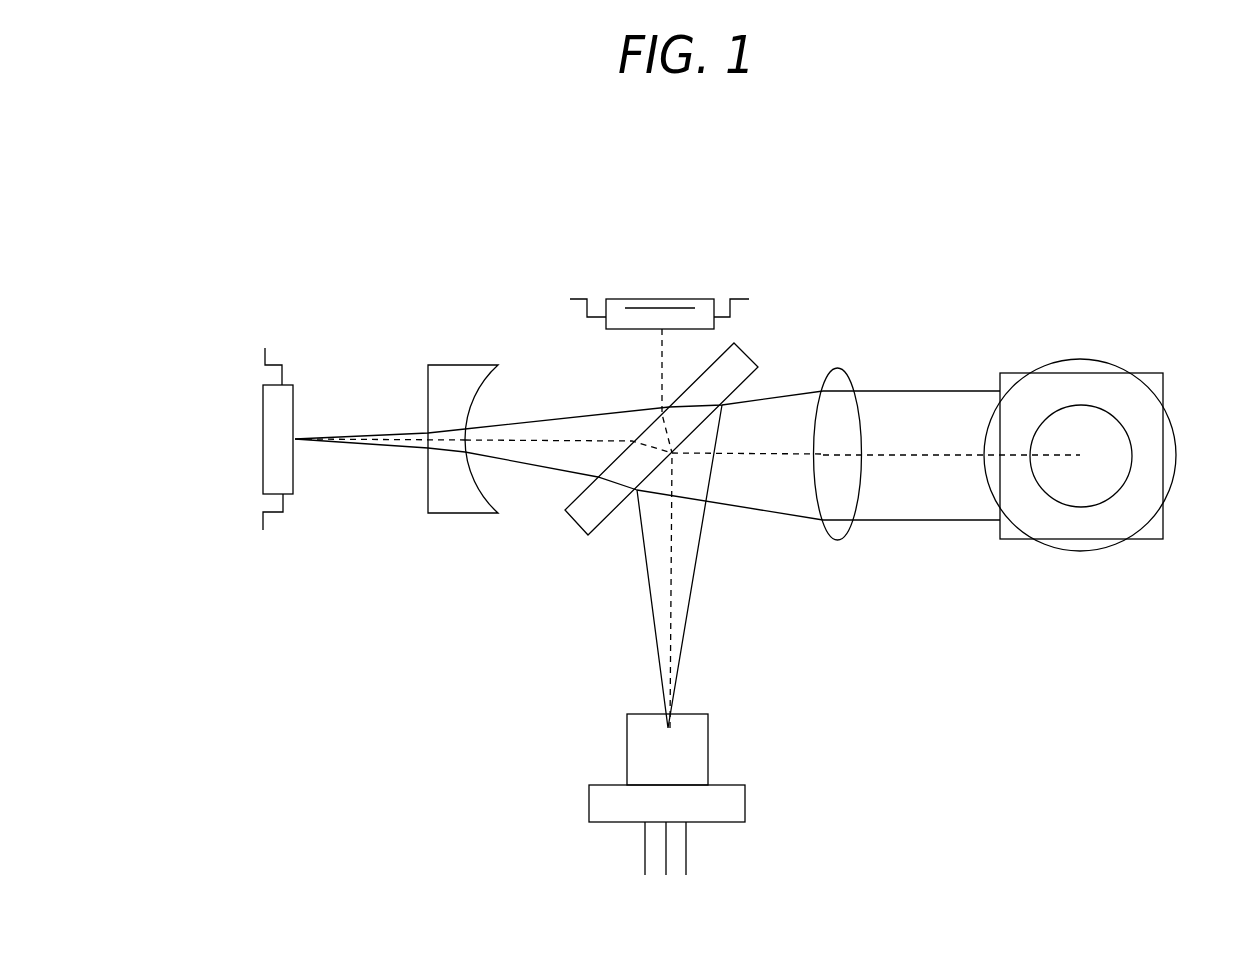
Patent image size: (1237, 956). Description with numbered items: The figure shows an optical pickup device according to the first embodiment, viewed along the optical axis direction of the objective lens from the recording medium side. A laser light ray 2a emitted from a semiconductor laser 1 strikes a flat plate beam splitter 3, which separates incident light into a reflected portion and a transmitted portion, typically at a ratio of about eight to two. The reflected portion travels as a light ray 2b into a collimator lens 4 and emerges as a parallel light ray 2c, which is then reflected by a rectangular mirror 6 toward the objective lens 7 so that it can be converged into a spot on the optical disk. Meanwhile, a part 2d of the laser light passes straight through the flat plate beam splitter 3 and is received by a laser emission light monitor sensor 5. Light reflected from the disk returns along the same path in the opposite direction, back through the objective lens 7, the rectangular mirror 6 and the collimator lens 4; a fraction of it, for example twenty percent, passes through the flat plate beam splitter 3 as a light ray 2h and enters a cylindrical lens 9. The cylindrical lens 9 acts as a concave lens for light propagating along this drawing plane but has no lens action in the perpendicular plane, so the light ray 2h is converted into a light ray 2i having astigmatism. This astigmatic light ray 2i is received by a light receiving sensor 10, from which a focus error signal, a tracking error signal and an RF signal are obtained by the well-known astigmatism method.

The semiconductor laser 1 is at (733, 805).
The laser light ray 2a is at (678, 628).
The light ray 2b is at (767, 490).
The parallel light ray 2c is at (938, 502).
The part of the laser light 2d is at (660, 362).
The light ray 2h is at (527, 422).
The light ray having astigmatism 2i is at (393, 434).
The flat plate beam splitter 3 is at (572, 524).
The collimator lens 4 is at (840, 368).
The laser emission light monitor sensor 5 is at (648, 299).
The rectangular mirror 6 is at (1152, 532).
The objective lens 7 is at (1082, 372).
The cylindrical lens 9 is at (437, 515).
The light receiving sensor 10 is at (260, 465).